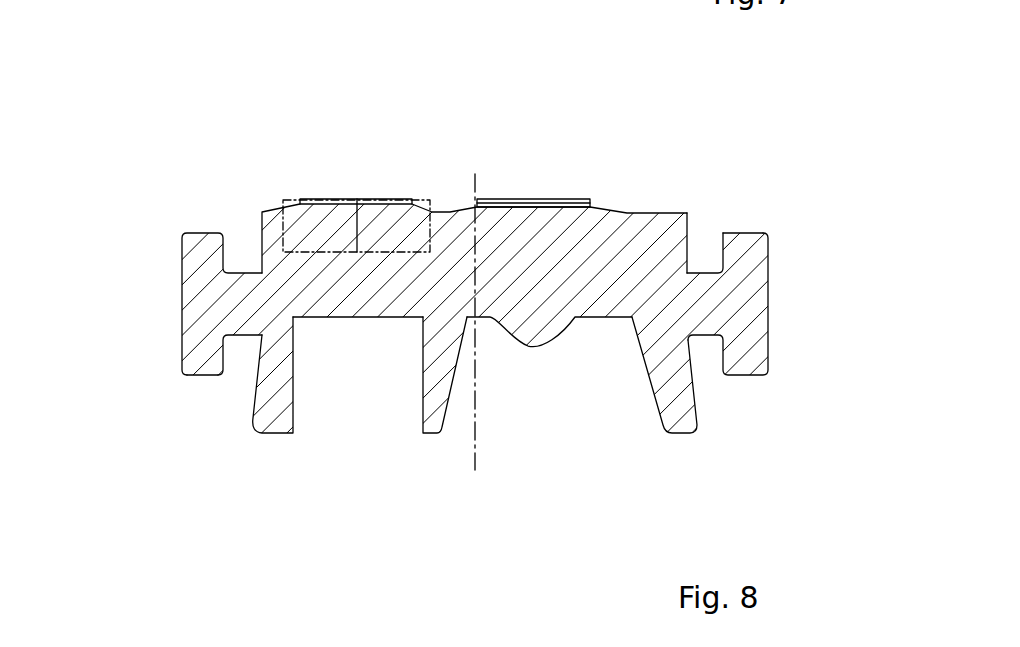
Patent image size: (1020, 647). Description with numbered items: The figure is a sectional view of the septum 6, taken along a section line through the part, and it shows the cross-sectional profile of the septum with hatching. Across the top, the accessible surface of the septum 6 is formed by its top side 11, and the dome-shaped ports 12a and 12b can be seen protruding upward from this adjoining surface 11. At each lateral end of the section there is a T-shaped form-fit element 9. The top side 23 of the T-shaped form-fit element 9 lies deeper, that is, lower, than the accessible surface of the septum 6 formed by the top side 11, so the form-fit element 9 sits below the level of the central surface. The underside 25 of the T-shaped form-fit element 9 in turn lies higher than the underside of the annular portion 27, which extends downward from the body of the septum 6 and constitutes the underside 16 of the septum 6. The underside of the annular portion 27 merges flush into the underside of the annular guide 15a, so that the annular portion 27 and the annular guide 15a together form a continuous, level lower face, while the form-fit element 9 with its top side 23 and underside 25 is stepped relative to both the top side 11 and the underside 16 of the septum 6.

The septum 6 is at (243, 497).
The T-shaped form-fit element 9 is at (197, 307).
The top side 11 is at (652, 212).
The dome-shaped port 12a is at (352, 197).
The dome-shaped port 12b is at (523, 198).
The annular guide 15a is at (420, 375).
The underside of the septum 16 is at (270, 434).
The top side of the T-shaped form-fit element 23 is at (740, 233).
The underside of the T-shaped form-fit element 25 is at (198, 375).
The annular portion 27 is at (687, 413).